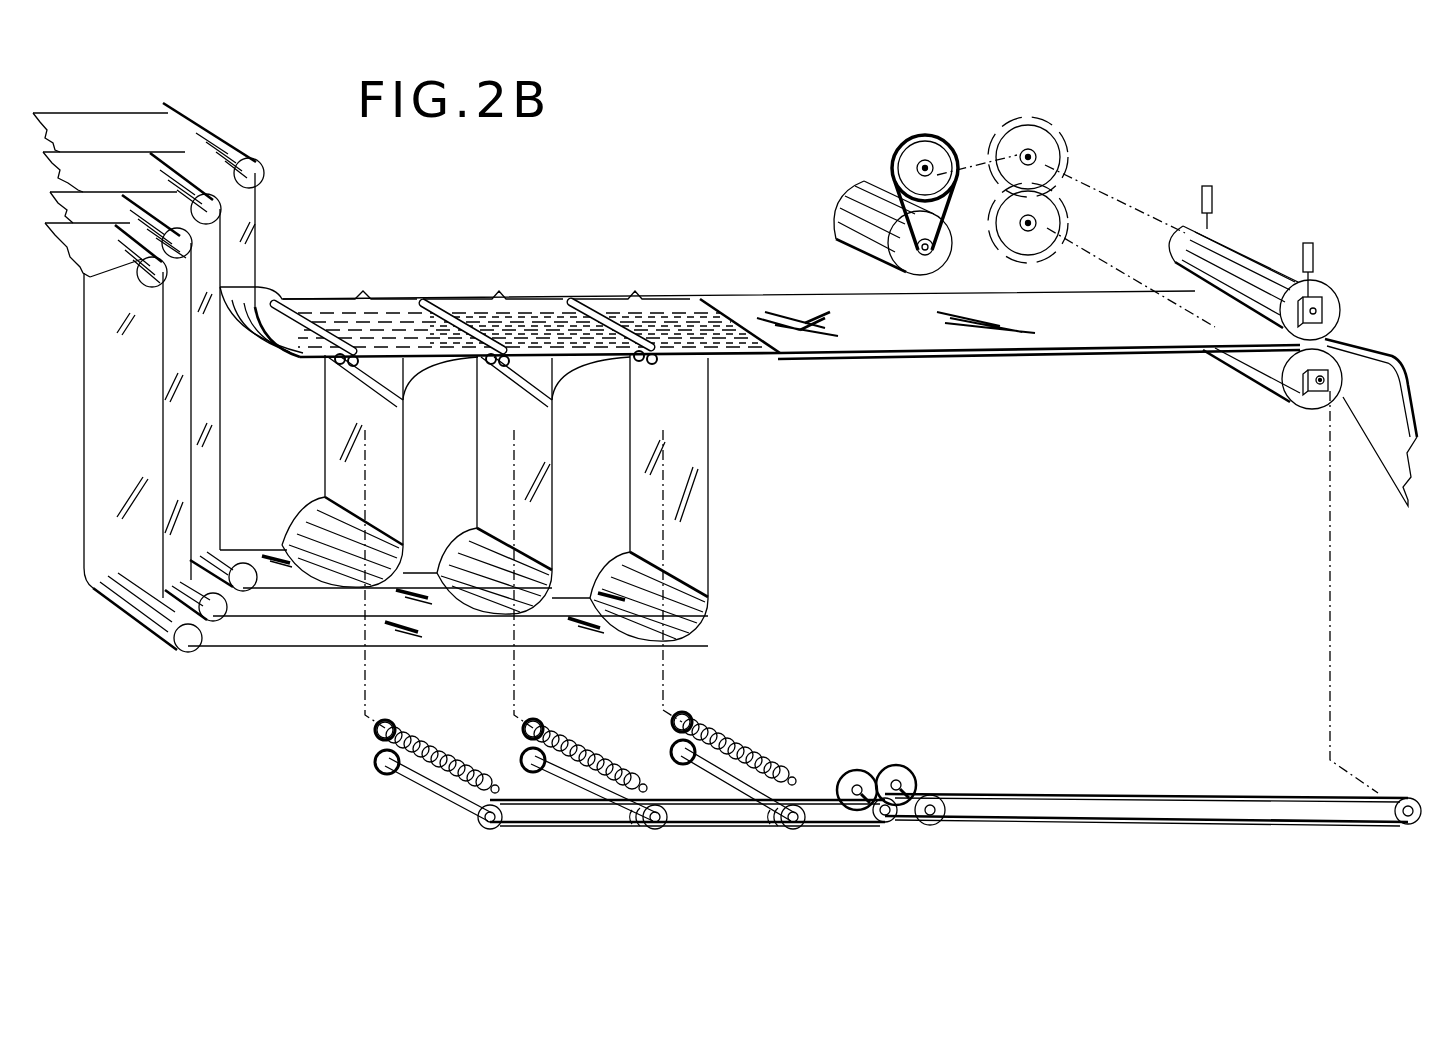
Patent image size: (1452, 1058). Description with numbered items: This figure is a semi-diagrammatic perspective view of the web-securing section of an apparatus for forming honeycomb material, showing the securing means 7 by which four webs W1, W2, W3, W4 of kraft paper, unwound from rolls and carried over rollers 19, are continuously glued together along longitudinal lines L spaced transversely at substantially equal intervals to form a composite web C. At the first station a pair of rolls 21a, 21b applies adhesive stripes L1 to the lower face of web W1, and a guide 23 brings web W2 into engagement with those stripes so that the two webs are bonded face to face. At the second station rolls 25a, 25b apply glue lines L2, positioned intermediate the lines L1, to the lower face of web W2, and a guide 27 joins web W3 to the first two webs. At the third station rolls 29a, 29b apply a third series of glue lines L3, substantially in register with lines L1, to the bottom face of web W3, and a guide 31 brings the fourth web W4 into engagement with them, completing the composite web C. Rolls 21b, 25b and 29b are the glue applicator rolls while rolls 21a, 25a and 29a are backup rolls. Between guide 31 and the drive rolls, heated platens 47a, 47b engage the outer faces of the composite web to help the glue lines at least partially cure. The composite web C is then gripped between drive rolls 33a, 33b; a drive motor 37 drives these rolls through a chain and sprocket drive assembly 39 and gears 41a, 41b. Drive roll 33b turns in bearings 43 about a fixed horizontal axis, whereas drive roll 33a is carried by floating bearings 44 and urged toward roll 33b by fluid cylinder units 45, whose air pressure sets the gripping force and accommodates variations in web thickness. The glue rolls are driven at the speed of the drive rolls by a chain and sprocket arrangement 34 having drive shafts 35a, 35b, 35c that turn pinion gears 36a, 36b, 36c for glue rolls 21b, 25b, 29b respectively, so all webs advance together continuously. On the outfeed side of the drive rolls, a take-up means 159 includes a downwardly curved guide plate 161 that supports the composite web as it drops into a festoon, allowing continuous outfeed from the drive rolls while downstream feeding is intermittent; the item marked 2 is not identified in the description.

The first web W1 is at (148, 132).
The second web W2 is at (145, 179).
The third web W3 is at (118, 214).
The fourth web W4 is at (122, 347).
The rollers 19 is at (267, 180).
The backup roll 21a is at (295, 300).
The glue applicator roll 21b is at (330, 358).
The guide 23 is at (406, 395).
The backup roll 25a is at (445, 300).
The glue applicator roll 25b is at (478, 360).
The guide 27 is at (562, 390).
The backup roll 29a is at (585, 298).
The glue applicator roll 29b is at (630, 360).
The guide 31 is at (720, 378).
The securing means 7 is at (393, 290).
The first glue stripes L1 is at (395, 310).
The second glue lines L2 is at (530, 307).
The third glue lines L3 is at (667, 300).
The glue lines L is at (695, 302).
The composite web C is at (772, 358).
The heated platen 47a is at (813, 320).
The heated platen 47b is at (990, 356).
The drive motor 37 is at (852, 182).
The chain and sprocket drive assembly 39 is at (950, 200).
The gear 41a is at (1047, 157).
The gear 41b is at (1047, 224).
The drive roll 33a is at (1340, 296).
The drive roll 33b is at (1292, 400).
The fluid cylinder units 45 is at (1212, 193).
The floating bearings 44 is at (1322, 312).
The bearings 43 is at (1313, 393).
The downwardly curved guide plate 161 is at (1354, 342).
The take-up means 159 is at (1422, 352).
The finished product 2 is at (1400, 388).
The chain and sprocket arrangement 34 is at (893, 752).
The drive shaft 35a is at (427, 790).
The drive shaft 35b is at (563, 777).
The drive shaft 35c is at (717, 777).
The pinion gear 36a is at (375, 757).
The pinion gear 36b is at (521, 758).
The pinion gear 36c is at (668, 752).